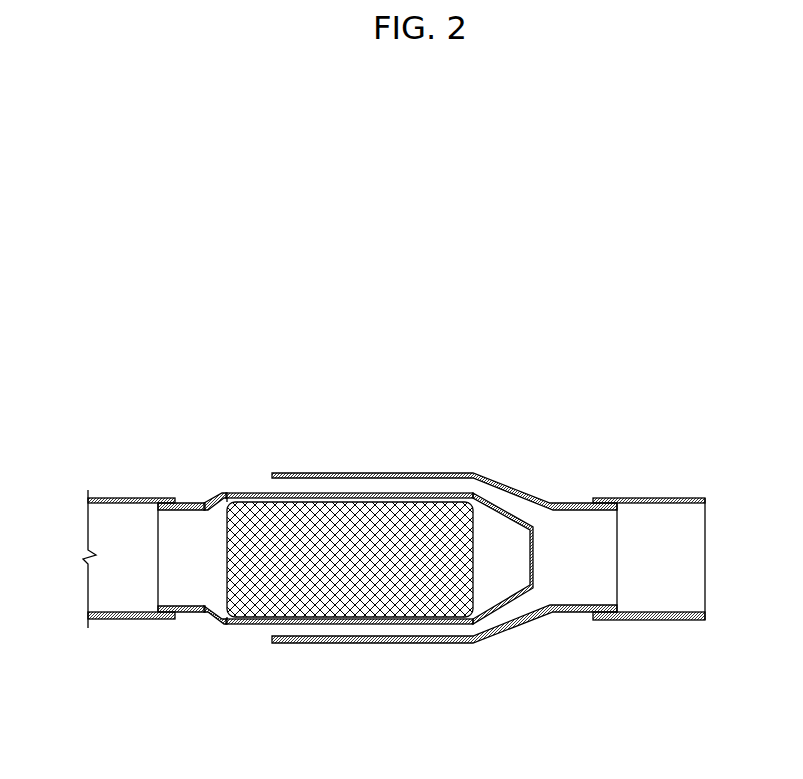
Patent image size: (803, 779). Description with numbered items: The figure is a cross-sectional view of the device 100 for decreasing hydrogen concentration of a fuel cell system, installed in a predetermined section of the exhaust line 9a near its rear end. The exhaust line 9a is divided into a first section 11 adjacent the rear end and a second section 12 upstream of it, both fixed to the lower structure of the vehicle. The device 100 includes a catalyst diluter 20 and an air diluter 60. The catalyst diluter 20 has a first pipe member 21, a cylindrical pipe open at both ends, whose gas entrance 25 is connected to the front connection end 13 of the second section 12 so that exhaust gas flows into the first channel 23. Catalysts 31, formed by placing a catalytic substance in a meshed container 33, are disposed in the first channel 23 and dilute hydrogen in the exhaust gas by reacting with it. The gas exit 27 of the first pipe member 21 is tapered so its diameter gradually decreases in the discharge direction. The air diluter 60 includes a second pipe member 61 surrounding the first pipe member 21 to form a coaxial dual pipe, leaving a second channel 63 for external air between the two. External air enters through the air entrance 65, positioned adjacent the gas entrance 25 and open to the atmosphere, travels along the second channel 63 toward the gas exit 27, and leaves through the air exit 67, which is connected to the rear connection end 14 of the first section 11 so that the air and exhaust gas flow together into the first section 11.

The device for decreasing hydrogen concentration 100 is at (352, 365).
The first section 11 is at (673, 620).
The second section 12 is at (134, 619).
The front connection end 13 is at (166, 498).
The rear connection end 14 is at (605, 498).
The catalyst diluter 20 is at (188, 729).
The first pipe member 21 is at (228, 634).
The first channel 23 is at (178, 575).
The gas entrance 25 is at (192, 503).
The gas exit 27 is at (525, 525).
The catalysts 31 is at (214, 578).
The container 33 is at (219, 520).
The air diluter 60 is at (461, 656).
The second pipe member 61 is at (367, 645).
The second channel 63 is at (288, 487).
The air entrance 65 is at (266, 634).
The air exit 67 is at (617, 585).
The exhaust line 9a is at (103, 630).